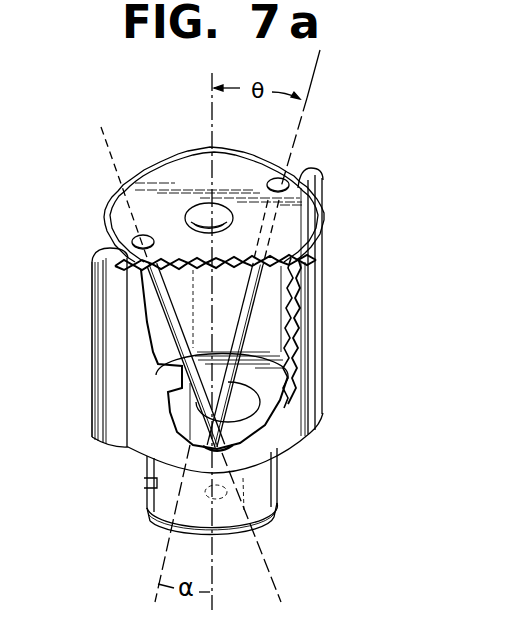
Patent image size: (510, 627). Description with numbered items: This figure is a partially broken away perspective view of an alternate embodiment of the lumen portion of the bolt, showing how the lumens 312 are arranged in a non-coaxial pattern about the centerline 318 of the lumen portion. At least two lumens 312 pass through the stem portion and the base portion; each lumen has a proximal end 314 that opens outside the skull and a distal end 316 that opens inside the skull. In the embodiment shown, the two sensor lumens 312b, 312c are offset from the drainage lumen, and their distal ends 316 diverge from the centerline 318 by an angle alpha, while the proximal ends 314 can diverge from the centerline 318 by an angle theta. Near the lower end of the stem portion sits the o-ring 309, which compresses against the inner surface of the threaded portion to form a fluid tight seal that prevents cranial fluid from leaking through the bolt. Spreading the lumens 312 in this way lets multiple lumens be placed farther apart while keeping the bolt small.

The o-ring 309 is at (283, 500).
The lumens 312 is at (298, 180).
The sensor lumen 312b is at (160, 291).
The sensor lumen 312c is at (240, 292).
The proximal end 314 is at (120, 206).
The distal end 316 is at (186, 483).
The centerline 318 is at (211, 119).